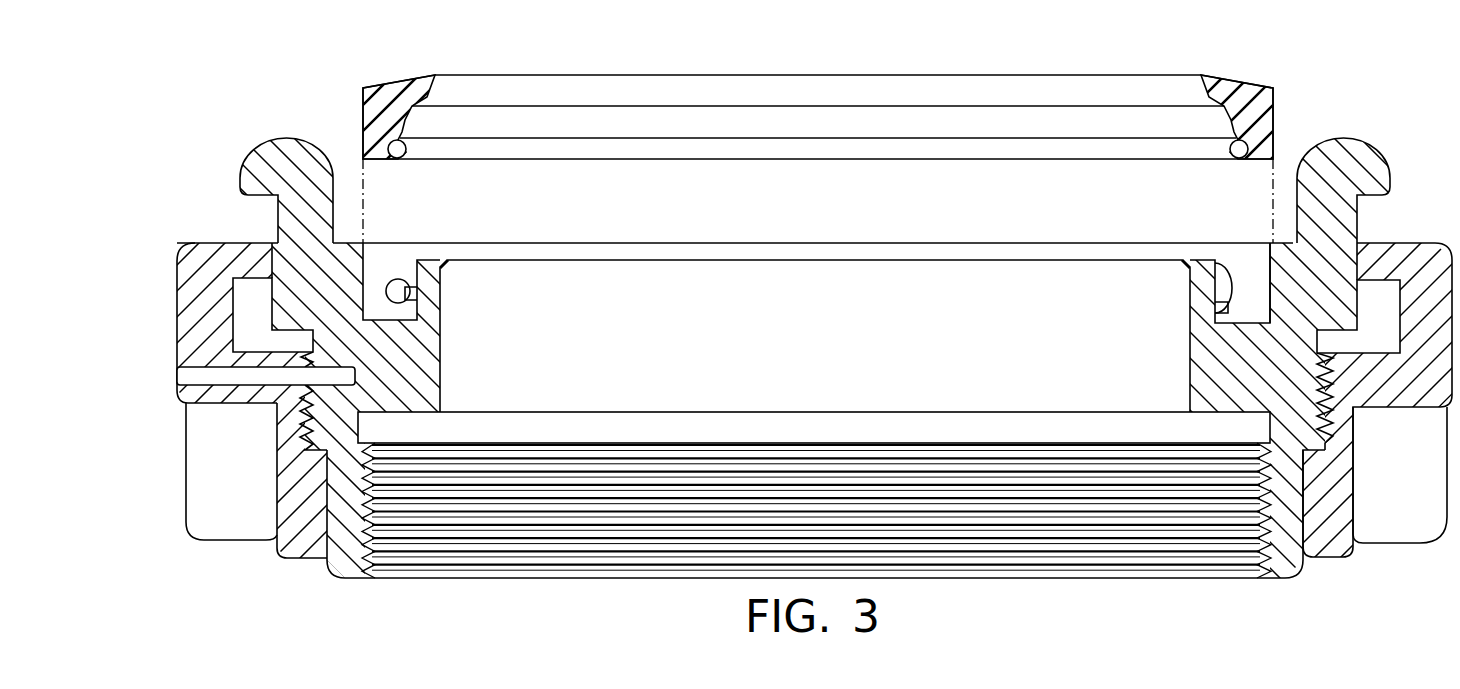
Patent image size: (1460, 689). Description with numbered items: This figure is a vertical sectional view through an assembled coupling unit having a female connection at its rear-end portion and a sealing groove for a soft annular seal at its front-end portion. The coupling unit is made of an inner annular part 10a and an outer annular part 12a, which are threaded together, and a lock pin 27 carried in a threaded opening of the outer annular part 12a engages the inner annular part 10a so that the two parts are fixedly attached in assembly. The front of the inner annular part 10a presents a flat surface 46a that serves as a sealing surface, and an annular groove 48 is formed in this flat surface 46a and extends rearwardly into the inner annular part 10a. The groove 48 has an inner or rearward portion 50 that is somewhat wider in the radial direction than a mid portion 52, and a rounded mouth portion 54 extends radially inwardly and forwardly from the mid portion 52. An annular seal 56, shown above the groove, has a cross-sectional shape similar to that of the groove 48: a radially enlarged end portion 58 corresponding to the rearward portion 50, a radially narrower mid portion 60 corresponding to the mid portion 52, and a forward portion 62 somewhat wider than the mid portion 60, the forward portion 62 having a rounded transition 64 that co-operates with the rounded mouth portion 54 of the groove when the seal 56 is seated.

The annular seal 56 is at (1079, 56).
The forward portion of the seal 62 is at (1218, 78).
The rounded transition 64 is at (1207, 103).
The mid portion of the seal 60 is at (1233, 127).
The radially enlarged end portion 58 is at (1223, 156).
The inner annular part 10a is at (466, 256).
The outer annular part 12a is at (264, 549).
The lock pin 27 is at (208, 362).
The annular groove 48 is at (373, 285).
The mid portion of the groove 52 is at (420, 306).
The rounded mouth portion 54 is at (1217, 262).
The inner or rearward portion of the groove 50 is at (1213, 317).
The flat surface 46a is at (1275, 243).